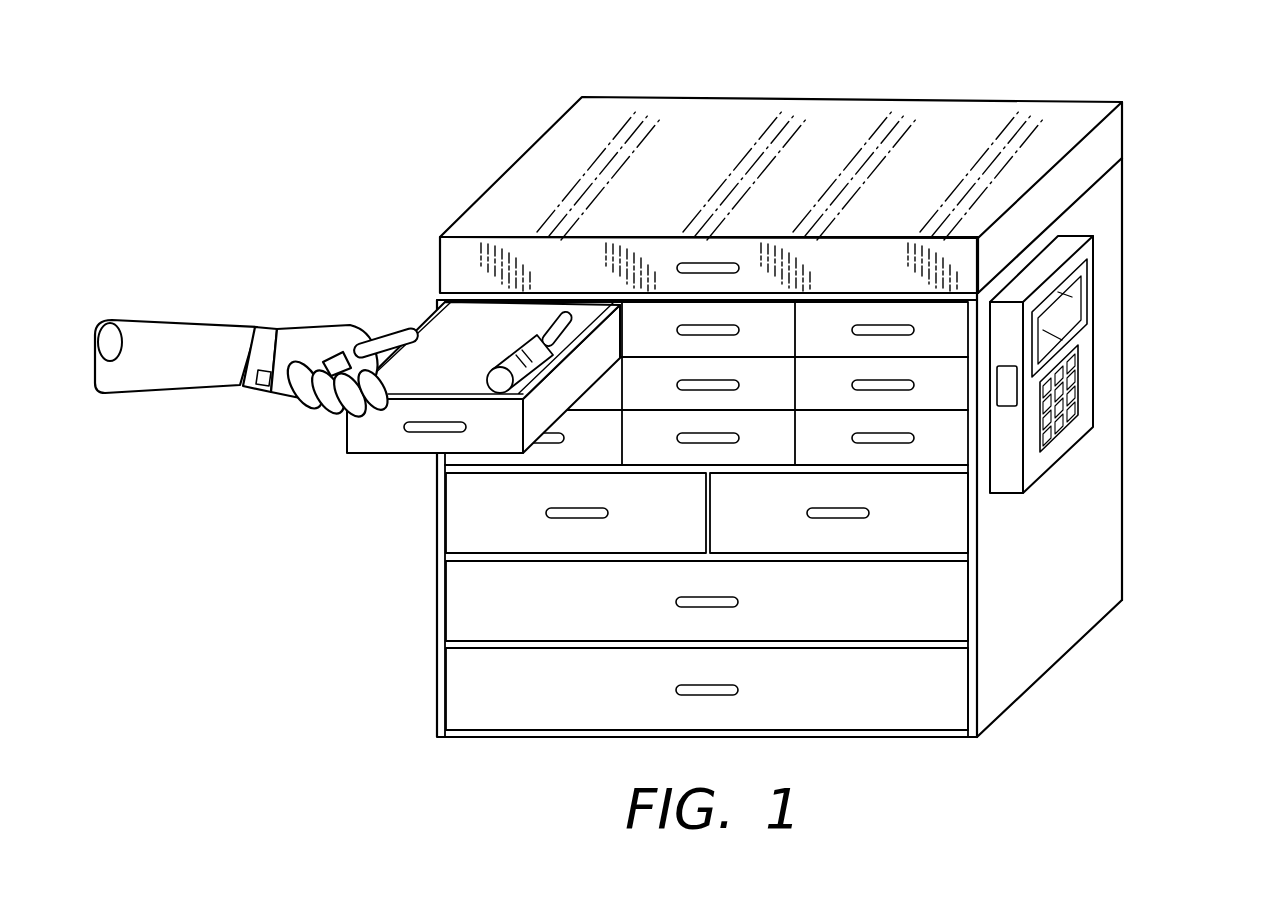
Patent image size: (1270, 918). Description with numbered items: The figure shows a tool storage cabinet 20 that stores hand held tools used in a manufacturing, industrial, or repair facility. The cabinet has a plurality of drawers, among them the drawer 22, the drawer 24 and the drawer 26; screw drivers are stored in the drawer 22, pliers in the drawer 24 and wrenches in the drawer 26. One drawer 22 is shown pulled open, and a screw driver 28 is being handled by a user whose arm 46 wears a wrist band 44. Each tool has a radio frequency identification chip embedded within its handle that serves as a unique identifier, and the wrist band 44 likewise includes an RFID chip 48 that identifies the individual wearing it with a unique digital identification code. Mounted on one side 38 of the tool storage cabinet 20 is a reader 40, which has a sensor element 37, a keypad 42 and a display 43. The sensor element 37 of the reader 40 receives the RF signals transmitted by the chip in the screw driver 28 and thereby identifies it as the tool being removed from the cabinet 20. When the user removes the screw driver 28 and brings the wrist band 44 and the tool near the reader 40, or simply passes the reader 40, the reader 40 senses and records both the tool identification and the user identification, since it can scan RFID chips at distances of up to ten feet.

The tool storage cabinet 20 is at (844, 387).
The drawer 22 is at (383, 428).
The drawer 24 is at (662, 342).
The drawer 26 is at (837, 342).
The screw driver 28 is at (385, 337).
The sensor element 37 is at (1008, 402).
The side 38 is at (1100, 526).
The reader 40 is at (1086, 362).
The keypad 42 is at (1084, 368).
The display 43 is at (1074, 316).
The wrist band 44 is at (265, 356).
The arm 46 is at (168, 322).
The RFID chip 48 is at (275, 388).